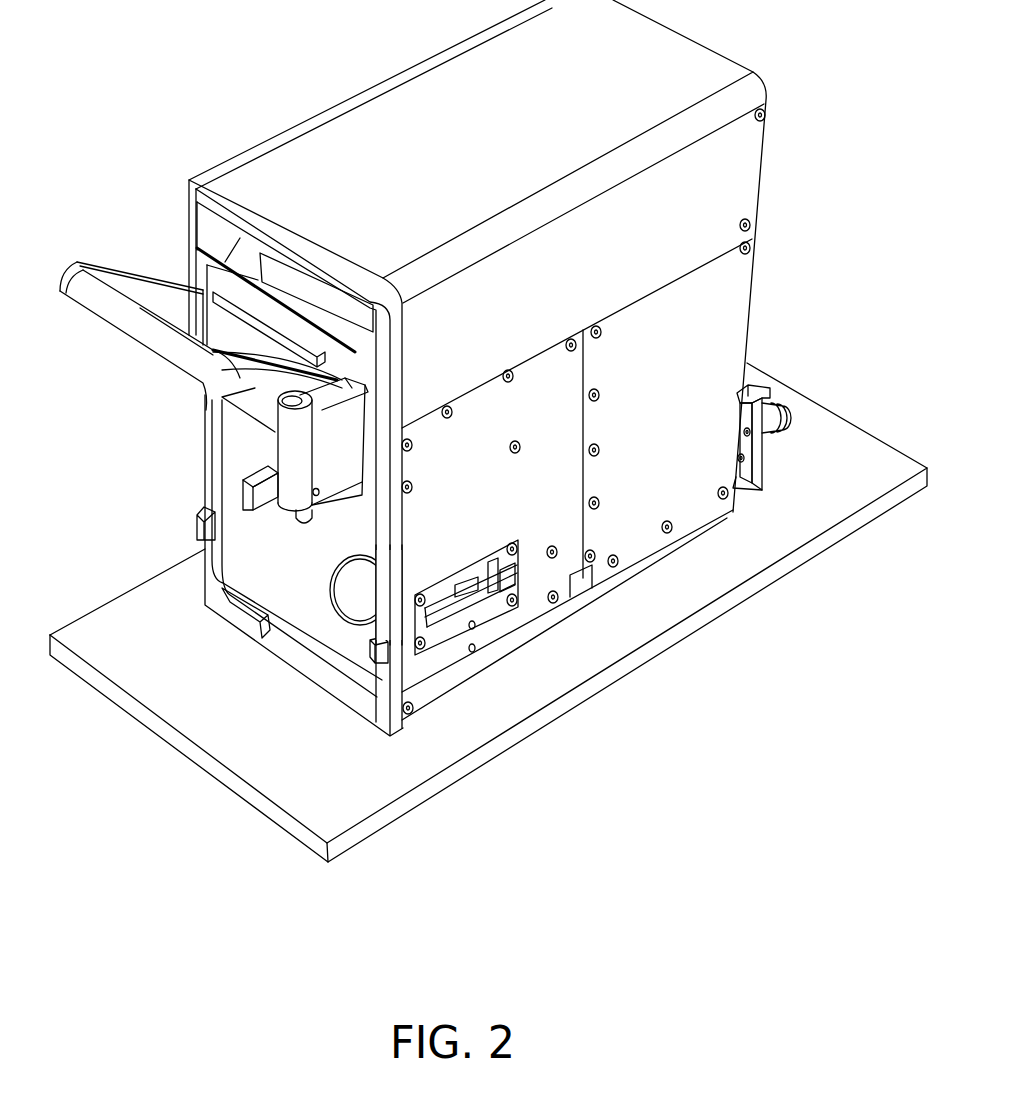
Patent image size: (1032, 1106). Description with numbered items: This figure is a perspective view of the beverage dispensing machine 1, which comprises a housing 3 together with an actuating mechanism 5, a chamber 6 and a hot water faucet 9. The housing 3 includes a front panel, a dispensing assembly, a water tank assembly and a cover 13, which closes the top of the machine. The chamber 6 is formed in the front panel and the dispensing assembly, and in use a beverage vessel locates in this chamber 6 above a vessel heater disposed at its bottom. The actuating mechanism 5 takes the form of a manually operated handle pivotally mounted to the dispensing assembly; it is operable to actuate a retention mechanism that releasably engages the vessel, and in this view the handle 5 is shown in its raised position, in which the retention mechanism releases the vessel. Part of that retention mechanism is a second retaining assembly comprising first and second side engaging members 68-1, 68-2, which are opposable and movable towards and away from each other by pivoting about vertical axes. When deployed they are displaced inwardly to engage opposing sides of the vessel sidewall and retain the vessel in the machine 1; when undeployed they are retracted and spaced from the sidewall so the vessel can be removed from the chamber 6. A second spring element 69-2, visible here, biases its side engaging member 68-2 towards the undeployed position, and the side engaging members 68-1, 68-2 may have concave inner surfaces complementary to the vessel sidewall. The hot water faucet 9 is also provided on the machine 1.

The beverage dispensing machine 1 is at (869, 90).
The housing 3 is at (522, 368).
The cover 13 is at (371, 114).
The actuating mechanism 5 is at (77, 283).
The chamber 6 is at (363, 647).
The hot water faucet 9 is at (350, 492).
The first side engaging member 68-1 is at (246, 494).
The second side engaging member 68-2 is at (493, 627).
The second spring element 69-2 is at (523, 590).